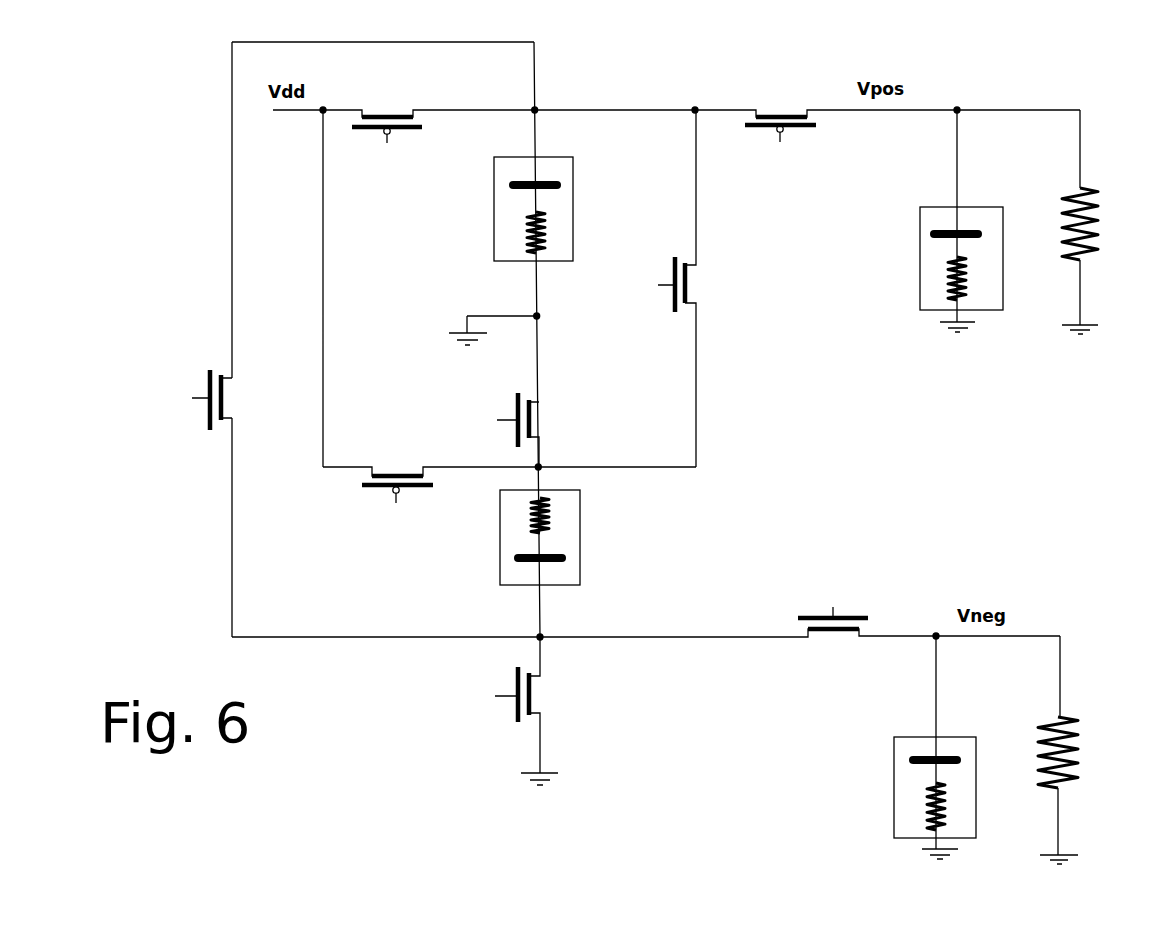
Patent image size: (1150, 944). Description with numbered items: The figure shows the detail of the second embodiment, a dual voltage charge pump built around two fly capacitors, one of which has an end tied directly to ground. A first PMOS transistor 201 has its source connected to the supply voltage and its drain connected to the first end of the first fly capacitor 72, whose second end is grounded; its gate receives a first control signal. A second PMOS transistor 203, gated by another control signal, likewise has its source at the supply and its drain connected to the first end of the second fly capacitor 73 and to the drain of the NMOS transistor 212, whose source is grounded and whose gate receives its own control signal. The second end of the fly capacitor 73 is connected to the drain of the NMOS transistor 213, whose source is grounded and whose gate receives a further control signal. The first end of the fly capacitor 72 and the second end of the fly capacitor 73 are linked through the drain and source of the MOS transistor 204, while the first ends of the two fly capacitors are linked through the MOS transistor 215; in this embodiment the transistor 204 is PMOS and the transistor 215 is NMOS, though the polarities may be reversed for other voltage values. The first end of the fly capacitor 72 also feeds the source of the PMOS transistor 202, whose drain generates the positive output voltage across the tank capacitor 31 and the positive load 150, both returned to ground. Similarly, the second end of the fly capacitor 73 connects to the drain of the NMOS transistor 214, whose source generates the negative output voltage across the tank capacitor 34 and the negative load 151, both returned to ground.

The first PMOS transistor 201 is at (420, 129).
The PMOS transistor 202 is at (813, 127).
The second PMOS transistor 203 is at (430, 488).
The MOS transistor 204 is at (208, 432).
The NMOS transistor 212 is at (515, 440).
The NMOS transistor 213 is at (515, 710).
The NMOS transistor 214 is at (866, 620).
The MOS transistor 215 is at (671, 305).
The first fly capacitor 72 is at (573, 223).
The second fly capacitor 73 is at (580, 541).
The tank capacitor 31 is at (1003, 207).
The tank capacitor 34 is at (976, 737).
The positive load 150 is at (1095, 232).
The negative load 151 is at (1078, 756).